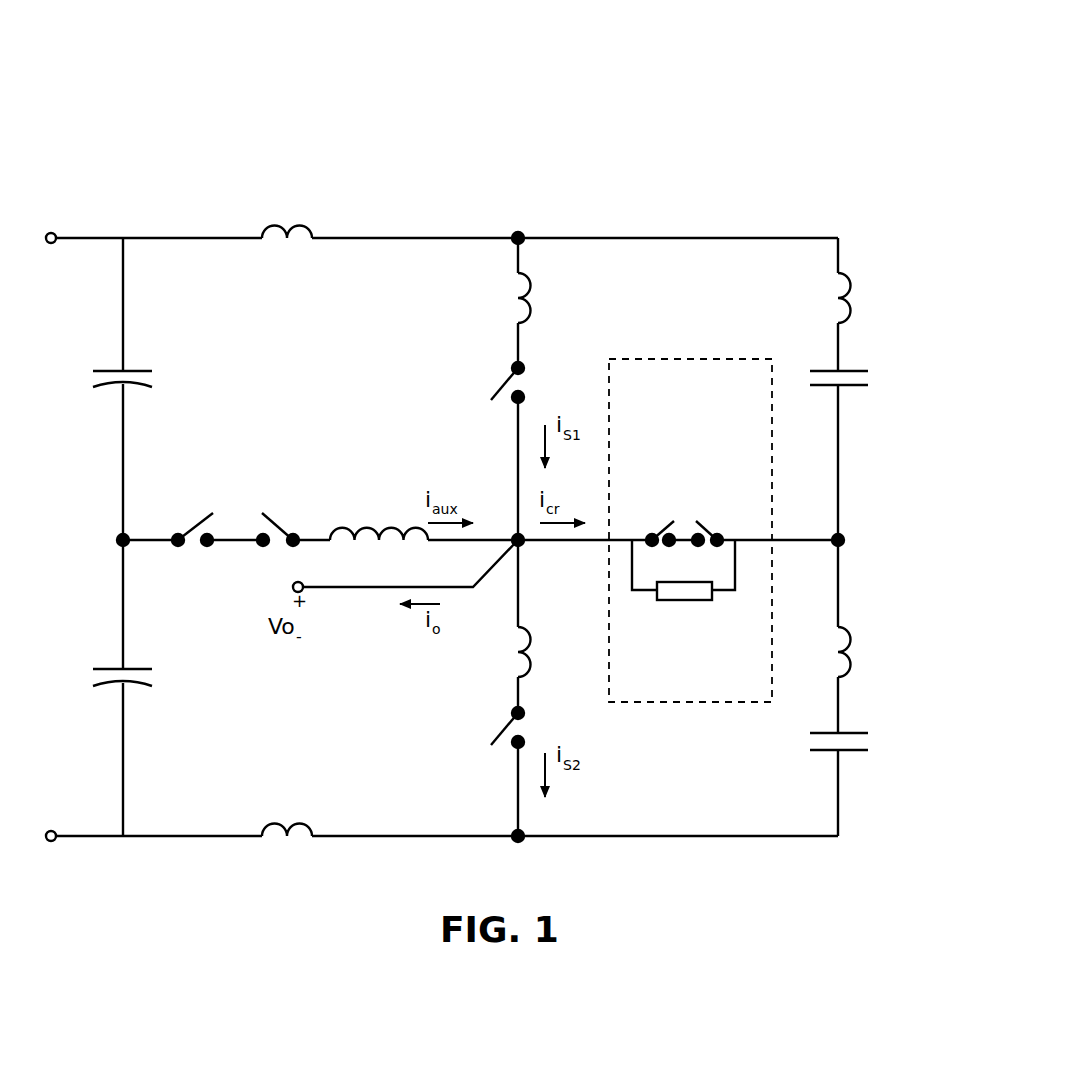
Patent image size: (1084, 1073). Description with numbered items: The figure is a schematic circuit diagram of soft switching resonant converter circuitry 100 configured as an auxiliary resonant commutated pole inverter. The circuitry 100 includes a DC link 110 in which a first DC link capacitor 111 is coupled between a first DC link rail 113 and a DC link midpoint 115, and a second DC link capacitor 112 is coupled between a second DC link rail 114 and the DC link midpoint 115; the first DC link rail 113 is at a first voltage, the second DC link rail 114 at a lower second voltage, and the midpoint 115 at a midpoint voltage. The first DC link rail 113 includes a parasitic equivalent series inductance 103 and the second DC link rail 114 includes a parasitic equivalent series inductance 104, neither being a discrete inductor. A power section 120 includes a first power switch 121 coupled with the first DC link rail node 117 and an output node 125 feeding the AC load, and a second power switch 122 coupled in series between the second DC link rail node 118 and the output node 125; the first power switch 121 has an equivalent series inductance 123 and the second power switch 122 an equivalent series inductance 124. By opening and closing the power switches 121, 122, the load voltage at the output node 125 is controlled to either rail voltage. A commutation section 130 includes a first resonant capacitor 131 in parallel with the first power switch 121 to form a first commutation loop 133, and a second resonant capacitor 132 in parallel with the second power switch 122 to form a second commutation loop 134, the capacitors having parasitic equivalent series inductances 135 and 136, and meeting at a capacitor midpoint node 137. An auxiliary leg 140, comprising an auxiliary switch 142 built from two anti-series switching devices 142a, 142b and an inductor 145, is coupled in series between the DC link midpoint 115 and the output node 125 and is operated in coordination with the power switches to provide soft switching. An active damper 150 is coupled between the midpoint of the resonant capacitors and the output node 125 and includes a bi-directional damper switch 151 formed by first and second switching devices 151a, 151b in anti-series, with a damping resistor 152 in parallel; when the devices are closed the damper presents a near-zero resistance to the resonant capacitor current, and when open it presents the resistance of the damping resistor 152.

The soft switching resonant converter circuitry 100 is at (838, 60).
The equivalent series inductance 103 is at (297, 226).
The equivalent series inductance 104 is at (278, 826).
The DC link 110 is at (130, 163).
The first DC link capacitor 111 is at (112, 369).
The second DC link capacitor 112 is at (112, 667).
The first DC link rail 113 is at (73, 237).
The second DC link rail 114 is at (86, 835).
The DC link midpoint 115 is at (118, 538).
The first DC link rail node 117 is at (518, 232).
The second DC link rail node 118 is at (518, 842).
The power section 120 is at (555, 200).
The first power switch 121 is at (507, 379).
The second power switch 122 is at (508, 727).
The equivalent series inductance 123 is at (531, 290).
The equivalent series inductance 124 is at (532, 641).
The output node 125 is at (515, 537).
The commutation section 130 is at (816, 190).
The first resonant capacitor 131 is at (843, 371).
The second resonant capacitor 132 is at (843, 733).
The first commutation loop 133 is at (878, 428).
The second commutation loop 134 is at (878, 788).
The equivalent series inductance 135 is at (851, 290).
The equivalent series inductance 136 is at (851, 645).
The resonant leg midpoint node 137 is at (845, 540).
The auxiliary leg 140 is at (308, 347).
The auxiliary switch 142 is at (236, 462).
The switching device 142a is at (200, 525).
The switching device 142b is at (282, 525).
The inductor 145 is at (370, 527).
The active damper 150 is at (688, 345).
The bi-directional damper switch 151 is at (688, 435).
The first switching device 151a is at (662, 531).
The second switching device 151b is at (702, 531).
The damping resistor 152 is at (678, 601).